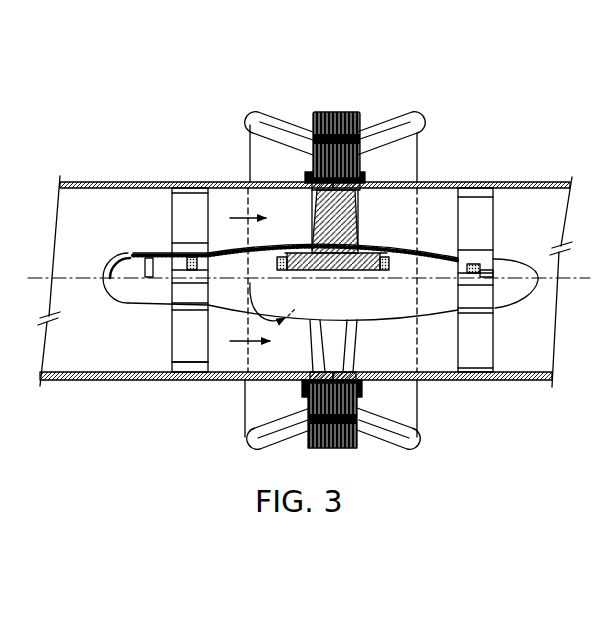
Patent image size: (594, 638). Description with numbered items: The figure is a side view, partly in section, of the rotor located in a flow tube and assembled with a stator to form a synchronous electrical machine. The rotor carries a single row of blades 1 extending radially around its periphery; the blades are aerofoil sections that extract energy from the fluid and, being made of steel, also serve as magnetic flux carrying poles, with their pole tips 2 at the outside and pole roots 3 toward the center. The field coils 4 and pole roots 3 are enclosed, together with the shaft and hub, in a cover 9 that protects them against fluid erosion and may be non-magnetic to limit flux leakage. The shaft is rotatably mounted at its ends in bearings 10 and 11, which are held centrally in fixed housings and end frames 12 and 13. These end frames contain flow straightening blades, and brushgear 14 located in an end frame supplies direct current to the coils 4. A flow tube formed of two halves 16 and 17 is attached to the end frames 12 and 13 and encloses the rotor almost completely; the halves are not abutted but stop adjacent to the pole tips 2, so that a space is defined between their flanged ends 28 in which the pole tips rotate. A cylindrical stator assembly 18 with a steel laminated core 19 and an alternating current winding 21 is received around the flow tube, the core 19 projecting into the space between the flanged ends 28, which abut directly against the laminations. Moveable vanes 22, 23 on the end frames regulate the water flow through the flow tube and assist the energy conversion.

The blades 1 is at (357, 205).
The pole tips 2 is at (343, 207).
The pole roots 3 is at (313, 233).
The field coils 4 is at (393, 260).
The cover 9 is at (237, 307).
The bearing 10 is at (193, 254).
The bearing 11 is at (470, 258).
The end frame 12 is at (173, 368).
The end frame 13 is at (483, 370).
The brushgear 14 is at (145, 254).
The flow tube half 16 is at (162, 381).
The flow tube half 17 is at (435, 382).
The stator assembly 18 is at (333, 98).
The laminated core 19 is at (355, 112).
The winding 21 is at (263, 106).
The moveable vanes 22 is at (198, 187).
The moveable vanes 23 is at (480, 188).
The flanged ends 28 is at (360, 172).